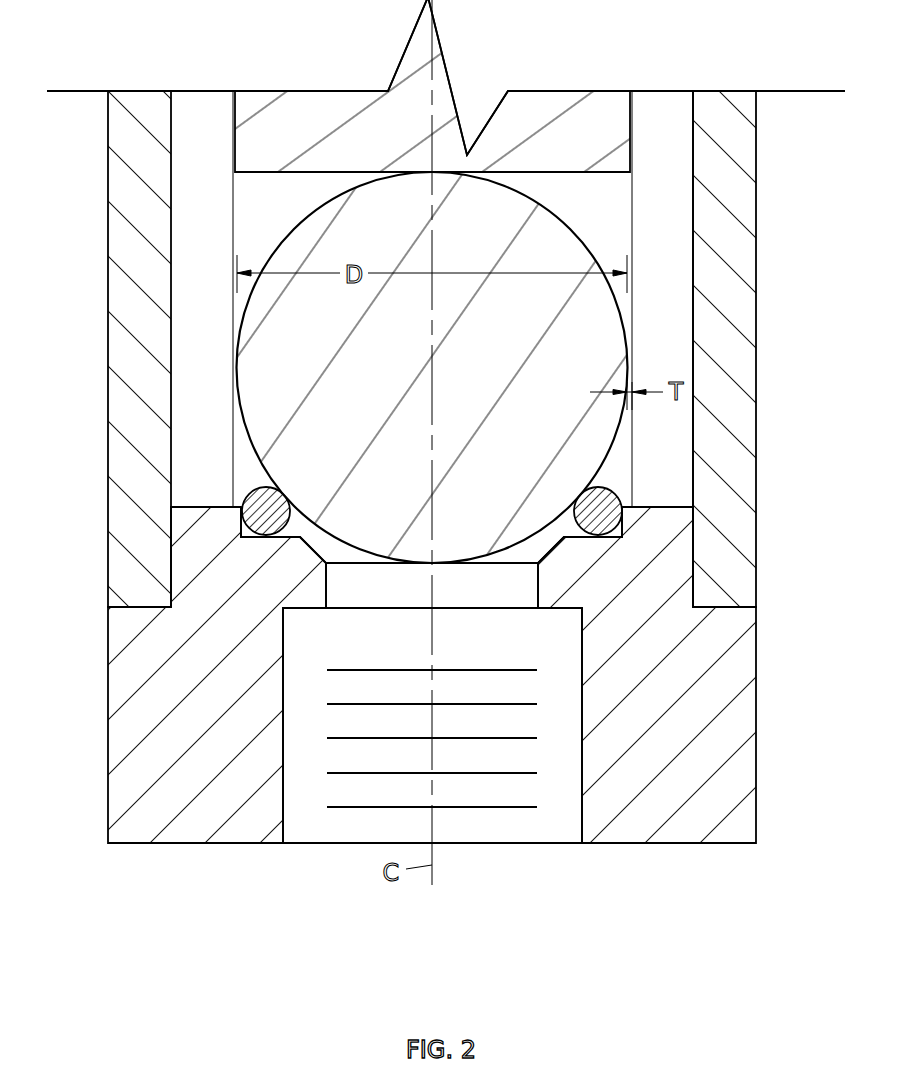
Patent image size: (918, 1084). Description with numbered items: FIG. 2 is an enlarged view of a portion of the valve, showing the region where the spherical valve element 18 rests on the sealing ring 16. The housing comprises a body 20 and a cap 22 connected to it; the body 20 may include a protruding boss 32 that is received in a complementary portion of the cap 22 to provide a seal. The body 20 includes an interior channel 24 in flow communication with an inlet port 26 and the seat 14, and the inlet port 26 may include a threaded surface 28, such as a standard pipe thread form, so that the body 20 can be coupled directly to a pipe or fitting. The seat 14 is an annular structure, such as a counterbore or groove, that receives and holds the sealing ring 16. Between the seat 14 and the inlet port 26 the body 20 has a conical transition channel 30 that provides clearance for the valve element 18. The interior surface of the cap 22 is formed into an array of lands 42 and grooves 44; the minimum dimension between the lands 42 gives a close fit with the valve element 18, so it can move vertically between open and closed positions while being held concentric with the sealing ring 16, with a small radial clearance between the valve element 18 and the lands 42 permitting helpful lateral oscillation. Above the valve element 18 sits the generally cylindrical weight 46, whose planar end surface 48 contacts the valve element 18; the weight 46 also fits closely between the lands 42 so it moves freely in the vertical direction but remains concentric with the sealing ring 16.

The seat 14 is at (247, 538).
The sealing ring 16 is at (247, 500).
The valve element 18 is at (484, 347).
The body 20 is at (740, 658).
The cap 22 is at (748, 554).
The interior channel 24 is at (528, 657).
The inlet port 26 is at (315, 850).
The threaded surface 28 is at (582, 787).
The conical transition channel 30 is at (310, 552).
The protruding boss 32 is at (672, 525).
The lands 42 is at (628, 132).
The grooves 44 is at (682, 107).
The weight 46 is at (539, 105).
The planar end surface 48 is at (560, 172).